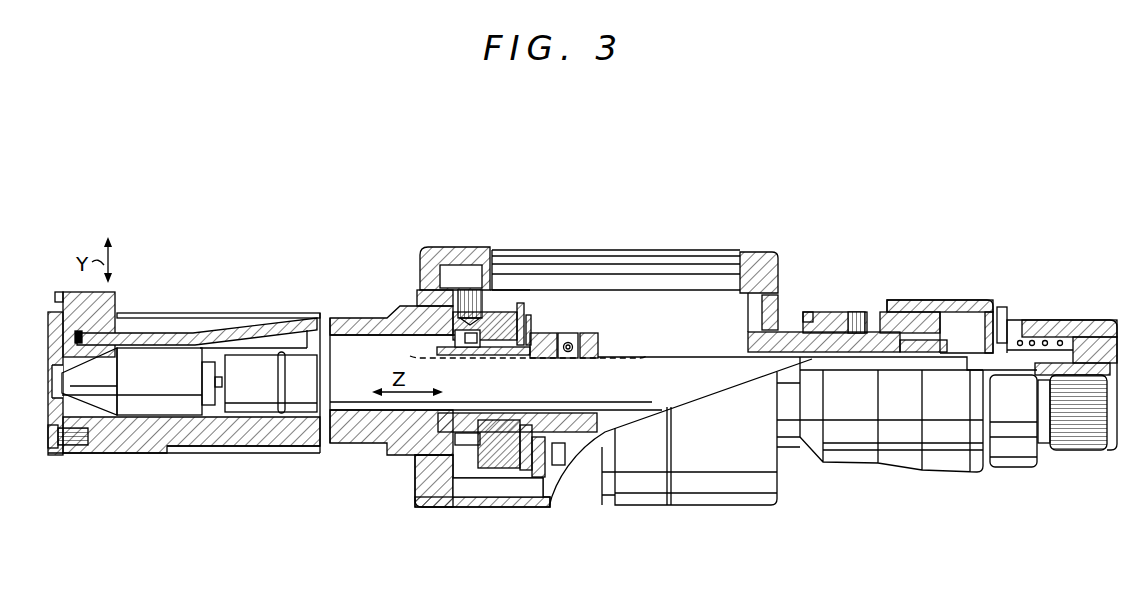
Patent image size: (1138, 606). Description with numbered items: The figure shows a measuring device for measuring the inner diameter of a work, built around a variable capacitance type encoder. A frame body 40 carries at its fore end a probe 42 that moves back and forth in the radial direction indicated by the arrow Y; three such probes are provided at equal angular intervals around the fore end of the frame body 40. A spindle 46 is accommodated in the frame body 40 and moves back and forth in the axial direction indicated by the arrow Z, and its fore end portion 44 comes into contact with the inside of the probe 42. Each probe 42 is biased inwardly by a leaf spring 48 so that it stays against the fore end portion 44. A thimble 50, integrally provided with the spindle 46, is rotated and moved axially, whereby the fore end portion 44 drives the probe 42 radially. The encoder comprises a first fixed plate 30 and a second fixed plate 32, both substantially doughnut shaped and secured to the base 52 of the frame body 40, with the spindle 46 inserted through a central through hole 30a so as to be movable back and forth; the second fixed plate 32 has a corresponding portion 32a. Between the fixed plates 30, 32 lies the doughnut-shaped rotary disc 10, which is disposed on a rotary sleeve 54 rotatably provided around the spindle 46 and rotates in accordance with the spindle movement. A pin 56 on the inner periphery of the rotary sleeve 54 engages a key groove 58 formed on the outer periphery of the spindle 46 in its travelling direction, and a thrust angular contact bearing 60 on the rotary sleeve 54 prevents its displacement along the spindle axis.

The rotary disc 10 is at (524, 300).
The first fixed plate 30 is at (518, 300).
The through hole 30a is at (517, 343).
The second fixed plate 32 is at (545, 300).
The rotor ring portion 32a is at (542, 345).
The frame body 40 is at (353, 440).
The probe 42 is at (116, 302).
The fore end portion 44 is at (140, 402).
The spindle 46 is at (297, 403).
The leaf spring 48 is at (240, 330).
The thimble 50 is at (927, 300).
The base 52 is at (527, 470).
The rotary sleeve 54 is at (573, 343).
The pin 56 is at (598, 348).
The key groove 58 is at (578, 358).
The thrust angular contact bearing 60 is at (467, 347).